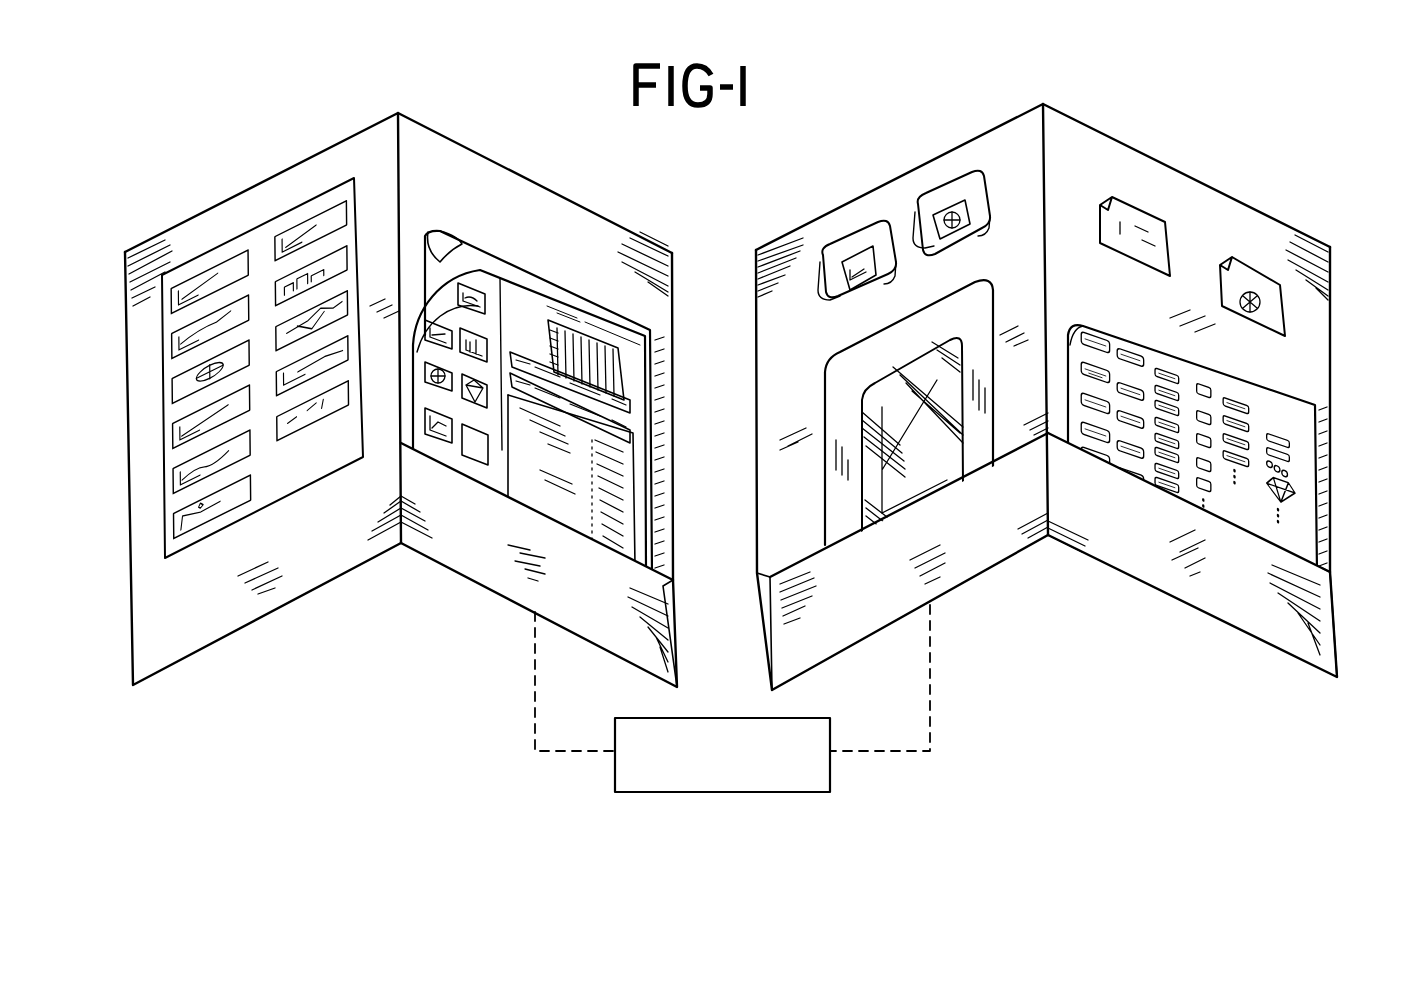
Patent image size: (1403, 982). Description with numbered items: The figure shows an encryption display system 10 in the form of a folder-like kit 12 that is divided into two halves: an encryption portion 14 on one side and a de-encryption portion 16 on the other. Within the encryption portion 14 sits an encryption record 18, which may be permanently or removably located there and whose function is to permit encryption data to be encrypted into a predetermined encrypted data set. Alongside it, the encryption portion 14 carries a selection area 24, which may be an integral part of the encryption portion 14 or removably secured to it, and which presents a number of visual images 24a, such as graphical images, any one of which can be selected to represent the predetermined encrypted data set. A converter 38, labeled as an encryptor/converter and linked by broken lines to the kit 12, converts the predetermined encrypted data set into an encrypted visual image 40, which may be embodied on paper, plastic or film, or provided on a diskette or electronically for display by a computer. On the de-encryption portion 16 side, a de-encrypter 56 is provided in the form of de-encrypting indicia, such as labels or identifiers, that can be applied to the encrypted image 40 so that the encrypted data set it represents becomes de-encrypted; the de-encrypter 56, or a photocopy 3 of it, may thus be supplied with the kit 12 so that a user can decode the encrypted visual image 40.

The display system 10 is at (800, 192).
The kit 12 is at (775, 240).
The encryption portion 14 is at (240, 632).
The de-encryption portion 16 is at (1340, 625).
The photocopy 3 is at (628, 322).
The encryption record 18 is at (643, 405).
The selection area 24 is at (328, 186).
The visual image 24a is at (274, 284).
The converter 38 is at (615, 778).
The encrypted visual image 40 is at (916, 362).
The de-encrypter 56 is at (1283, 395).